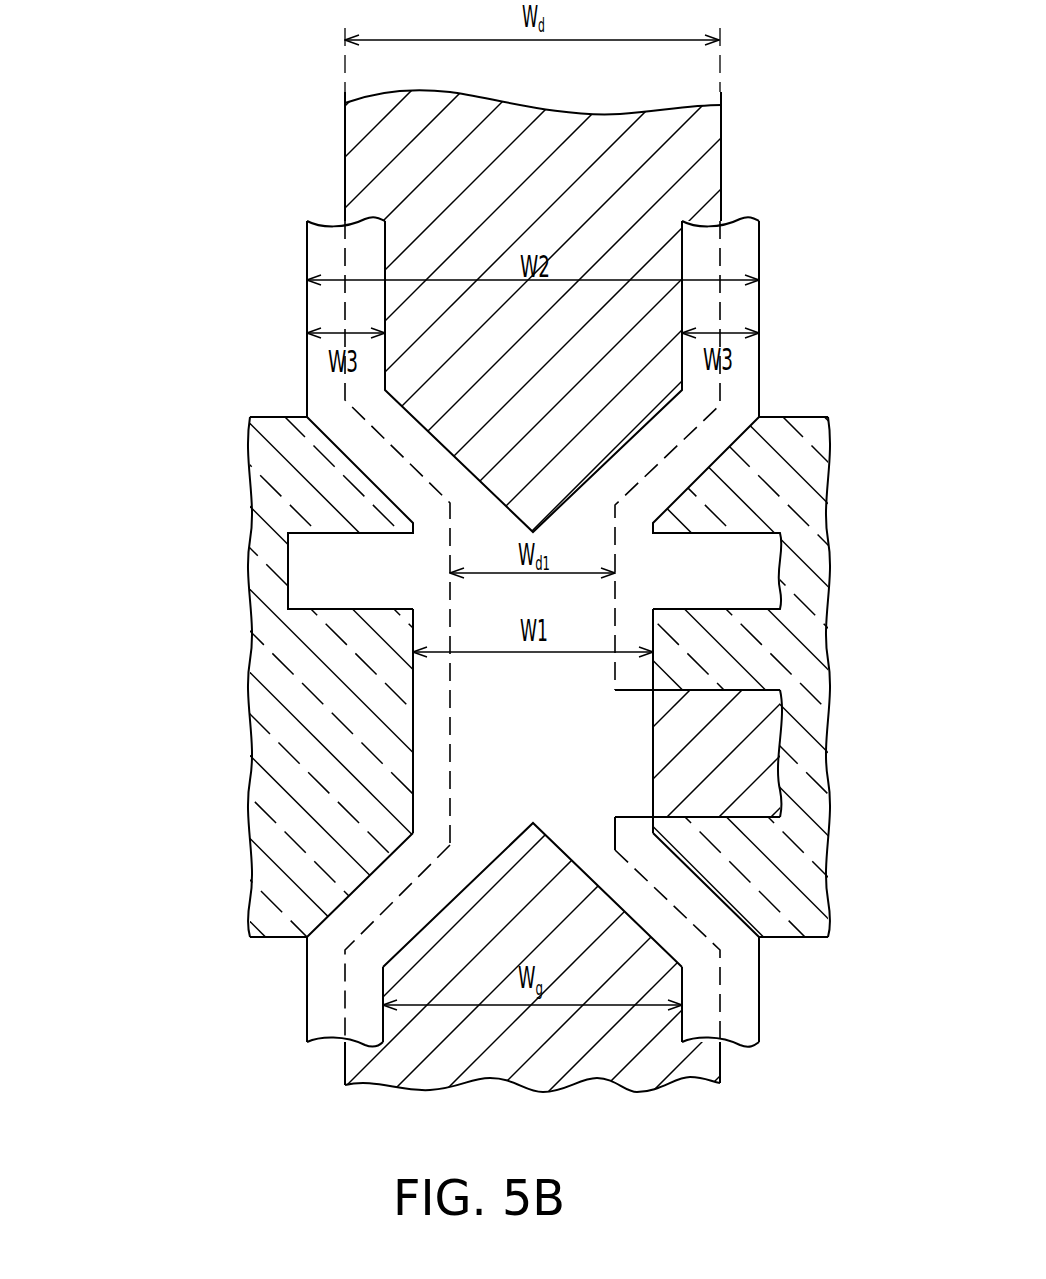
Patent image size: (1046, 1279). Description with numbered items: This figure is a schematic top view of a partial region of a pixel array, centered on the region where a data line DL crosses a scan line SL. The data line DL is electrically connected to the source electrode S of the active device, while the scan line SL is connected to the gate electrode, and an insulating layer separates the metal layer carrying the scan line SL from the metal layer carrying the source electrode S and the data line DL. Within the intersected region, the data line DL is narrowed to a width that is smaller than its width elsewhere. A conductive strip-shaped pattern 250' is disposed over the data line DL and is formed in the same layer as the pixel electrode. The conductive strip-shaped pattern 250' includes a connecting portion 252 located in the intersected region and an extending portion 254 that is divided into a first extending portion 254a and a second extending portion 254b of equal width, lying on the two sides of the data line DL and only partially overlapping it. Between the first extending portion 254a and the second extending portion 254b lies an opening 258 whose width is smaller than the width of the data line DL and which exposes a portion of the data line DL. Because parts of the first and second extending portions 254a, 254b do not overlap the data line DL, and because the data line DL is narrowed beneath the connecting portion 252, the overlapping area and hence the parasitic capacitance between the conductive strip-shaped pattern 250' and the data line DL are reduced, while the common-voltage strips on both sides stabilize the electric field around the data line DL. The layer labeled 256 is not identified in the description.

The data line DL is at (712, 155).
The scan line SL is at (278, 473).
The source electrode S is at (765, 750).
The conductive strip-shaped pattern 250' is at (393, 631).
The ohmic contact layer 256 is at (305, 571).
The connecting portion 252 is at (425, 725).
The extending portion 254 is at (405, 631).
The first extending portion 254a is at (623, 890).
The second extending portion 254b is at (412, 836).
The opening 258 is at (577, 945).